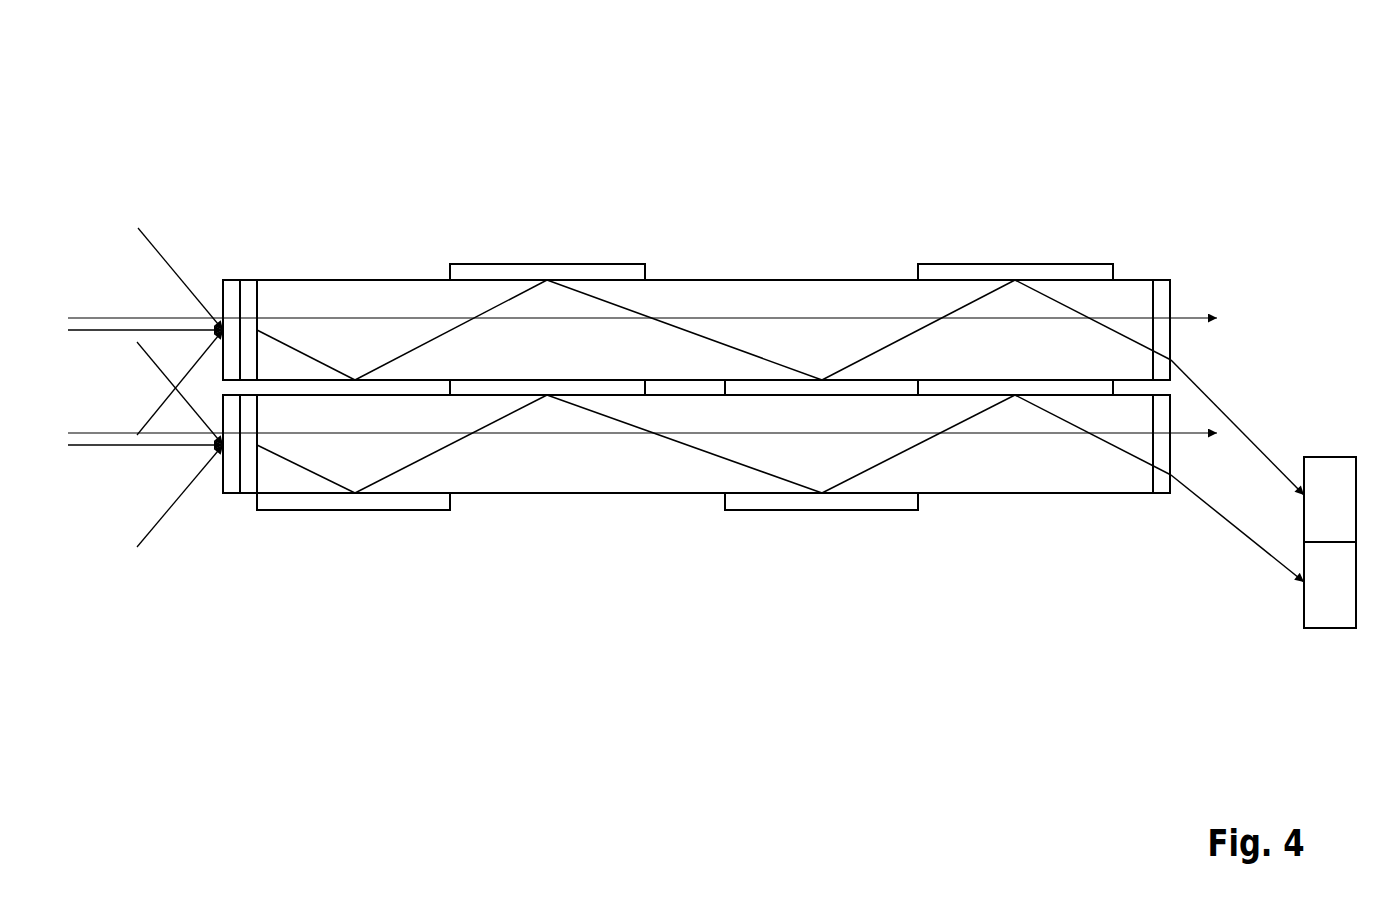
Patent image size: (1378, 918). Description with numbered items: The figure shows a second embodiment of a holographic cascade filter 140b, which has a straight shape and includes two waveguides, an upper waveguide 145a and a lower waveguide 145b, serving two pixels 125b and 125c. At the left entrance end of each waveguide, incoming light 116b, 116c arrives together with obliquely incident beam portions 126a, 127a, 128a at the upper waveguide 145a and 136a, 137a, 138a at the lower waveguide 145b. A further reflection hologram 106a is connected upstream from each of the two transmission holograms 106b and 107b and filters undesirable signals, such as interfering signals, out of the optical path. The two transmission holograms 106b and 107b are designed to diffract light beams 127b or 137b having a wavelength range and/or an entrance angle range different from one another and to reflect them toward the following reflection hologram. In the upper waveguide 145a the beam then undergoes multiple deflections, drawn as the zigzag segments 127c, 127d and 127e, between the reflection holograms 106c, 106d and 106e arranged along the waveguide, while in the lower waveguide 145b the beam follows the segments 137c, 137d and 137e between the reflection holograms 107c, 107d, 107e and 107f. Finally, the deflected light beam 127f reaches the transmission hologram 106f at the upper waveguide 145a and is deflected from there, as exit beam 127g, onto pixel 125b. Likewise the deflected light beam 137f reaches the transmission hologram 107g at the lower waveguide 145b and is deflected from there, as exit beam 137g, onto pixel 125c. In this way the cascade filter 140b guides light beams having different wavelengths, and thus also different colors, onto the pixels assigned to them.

The reflection hologram 106a is at (232, 292).
The transmission hologram 106b is at (250, 292).
The reflection hologram 106c is at (547, 277).
The reflection hologram 106d is at (766, 388).
The reflective coating on first waveguide 106e is at (1015, 277).
The transmission hologram 106f is at (1162, 292).
The transmission hologram 107b is at (250, 486).
The reflection hologram 107c is at (378, 506).
The reflection hologram 107d is at (605, 388).
The reflection hologram 107e is at (833, 506).
The reflection hologram 107f is at (1037, 388).
The transmission hologram 107g is at (1162, 486).
The first light beam axis 116b is at (75, 317).
The second light beam axis 116c is at (73, 432).
The pixel 125b is at (1330, 456).
The pixel 125c is at (1325, 629).
The incoming beam portion 126a is at (150, 241).
The incoming beam portion 127a is at (139, 344).
The light beam 127b is at (305, 352).
The beam path segment 127c is at (490, 308).
The beam path segment 127d is at (615, 306).
The beam path segment 127e is at (958, 310).
The deflected light beam 127f is at (1082, 314).
The exit beam to detector 127g is at (1247, 436).
The incoming beam portion 128a is at (160, 410).
The incoming beam portion 136a is at (155, 329).
The incoming beam portion 137a is at (97, 446).
The light beam 137b is at (307, 470).
The beam path segment 137c is at (440, 452).
The beam path segment 137d is at (750, 468).
The beam path segment 137e is at (895, 456).
The deflected light beam 137f is at (1112, 446).
The exit beam to detector 137g is at (1232, 525).
The incoming beam portion 138a is at (152, 530).
The holographic cascade filter 140b is at (848, 137).
The upper waveguide 145a is at (858, 260).
The lower waveguide 145b is at (963, 537).